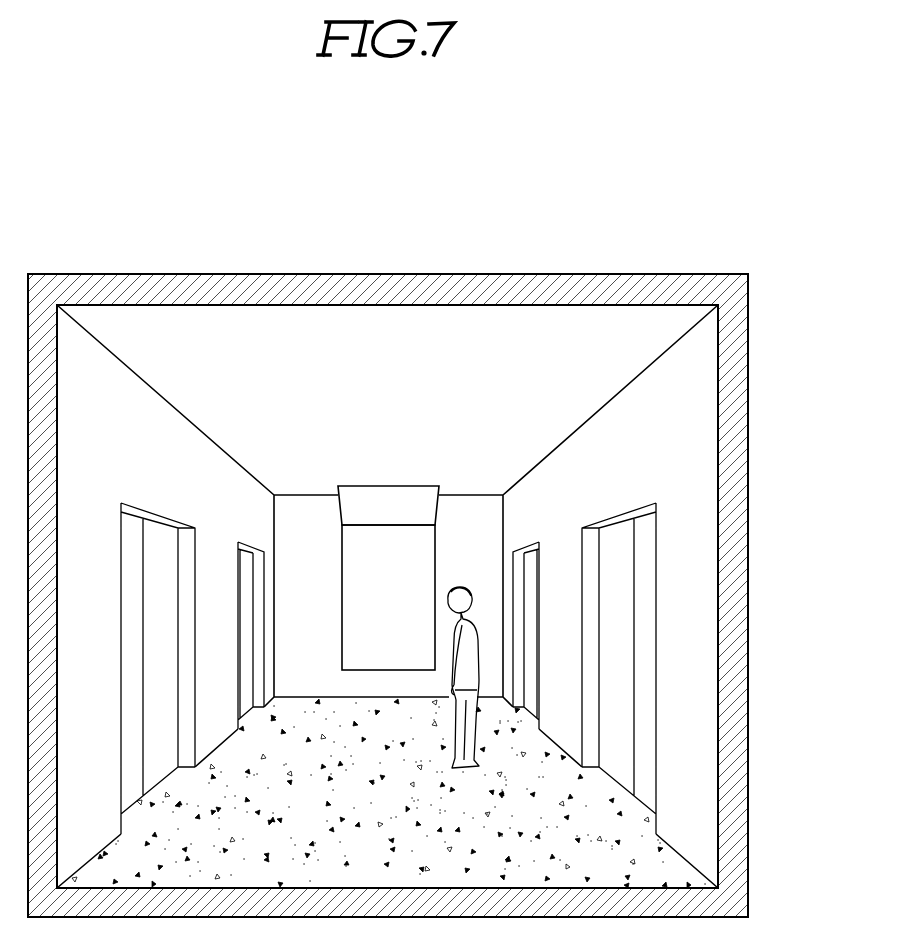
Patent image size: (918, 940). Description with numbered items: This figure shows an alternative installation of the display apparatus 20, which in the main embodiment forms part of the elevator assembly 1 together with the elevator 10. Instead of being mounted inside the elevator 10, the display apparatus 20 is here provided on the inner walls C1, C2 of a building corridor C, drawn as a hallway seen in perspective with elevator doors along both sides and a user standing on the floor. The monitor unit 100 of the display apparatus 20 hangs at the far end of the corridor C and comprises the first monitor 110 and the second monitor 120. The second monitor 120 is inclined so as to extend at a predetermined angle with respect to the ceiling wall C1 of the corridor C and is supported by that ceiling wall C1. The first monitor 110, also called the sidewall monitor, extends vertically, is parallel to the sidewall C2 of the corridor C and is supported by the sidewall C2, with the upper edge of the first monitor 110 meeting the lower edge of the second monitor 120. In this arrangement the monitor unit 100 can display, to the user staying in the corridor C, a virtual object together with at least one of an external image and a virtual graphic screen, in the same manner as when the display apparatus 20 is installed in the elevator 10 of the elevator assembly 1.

The elevator assembly 1 is at (395, 153).
The elevator 10 is at (670, 560).
The display apparatus 20 is at (368, 425).
The monitor unit 100 is at (423, 230).
The first monitor 110 is at (388, 447).
The second monitor 120 is at (372, 375).
The corridor C is at (177, 230).
The ceiling wall C1 is at (215, 340).
The sidewall C2 is at (194, 374).